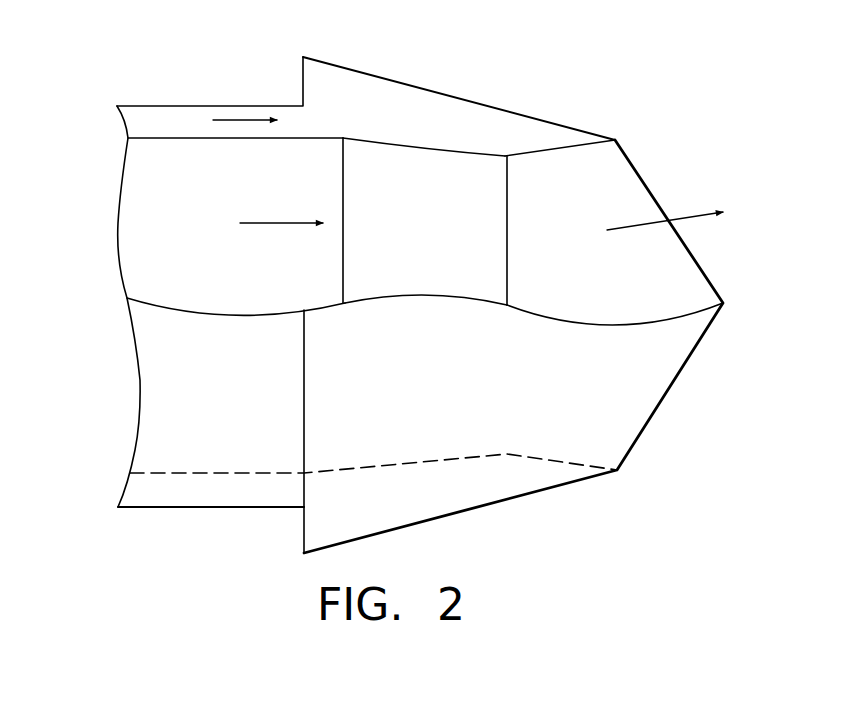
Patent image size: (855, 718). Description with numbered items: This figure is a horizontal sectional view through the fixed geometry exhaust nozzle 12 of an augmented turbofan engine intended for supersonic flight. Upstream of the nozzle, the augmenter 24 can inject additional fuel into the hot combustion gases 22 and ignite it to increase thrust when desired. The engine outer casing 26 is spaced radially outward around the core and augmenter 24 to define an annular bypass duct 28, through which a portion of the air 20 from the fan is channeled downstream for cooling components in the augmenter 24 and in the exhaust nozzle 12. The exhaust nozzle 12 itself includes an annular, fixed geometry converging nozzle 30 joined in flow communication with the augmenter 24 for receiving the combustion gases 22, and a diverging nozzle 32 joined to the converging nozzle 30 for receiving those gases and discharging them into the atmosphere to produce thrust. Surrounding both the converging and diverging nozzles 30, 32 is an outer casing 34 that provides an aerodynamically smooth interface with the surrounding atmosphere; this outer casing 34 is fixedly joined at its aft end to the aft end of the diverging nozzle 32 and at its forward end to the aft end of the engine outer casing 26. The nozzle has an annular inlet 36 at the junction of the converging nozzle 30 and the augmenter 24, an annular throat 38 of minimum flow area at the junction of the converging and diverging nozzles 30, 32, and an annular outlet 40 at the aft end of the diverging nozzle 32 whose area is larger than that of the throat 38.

The exhaust nozzle 12 is at (550, 75).
The air 20 is at (240, 120).
The combustion gases 22 is at (273, 223).
The augmenter 24 is at (196, 189).
The outer casing 26 is at (135, 103).
The bypass duct 28 is at (182, 133).
The converging nozzle 30 is at (440, 223).
The diverging nozzle 32 is at (561, 208).
The outer casing 34 is at (370, 75).
The inlet 36 is at (344, 264).
The throat 38 is at (507, 263).
The outlet 40 is at (650, 185).